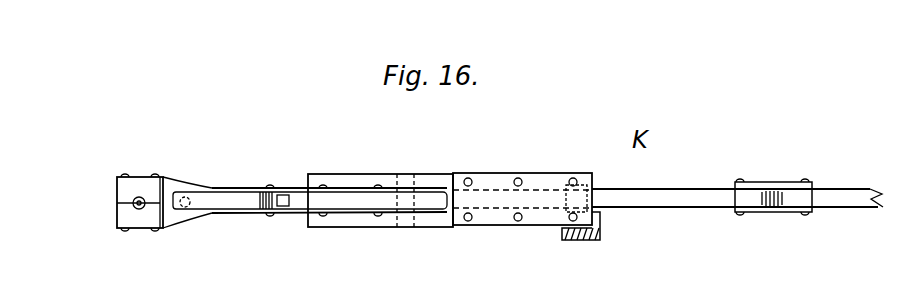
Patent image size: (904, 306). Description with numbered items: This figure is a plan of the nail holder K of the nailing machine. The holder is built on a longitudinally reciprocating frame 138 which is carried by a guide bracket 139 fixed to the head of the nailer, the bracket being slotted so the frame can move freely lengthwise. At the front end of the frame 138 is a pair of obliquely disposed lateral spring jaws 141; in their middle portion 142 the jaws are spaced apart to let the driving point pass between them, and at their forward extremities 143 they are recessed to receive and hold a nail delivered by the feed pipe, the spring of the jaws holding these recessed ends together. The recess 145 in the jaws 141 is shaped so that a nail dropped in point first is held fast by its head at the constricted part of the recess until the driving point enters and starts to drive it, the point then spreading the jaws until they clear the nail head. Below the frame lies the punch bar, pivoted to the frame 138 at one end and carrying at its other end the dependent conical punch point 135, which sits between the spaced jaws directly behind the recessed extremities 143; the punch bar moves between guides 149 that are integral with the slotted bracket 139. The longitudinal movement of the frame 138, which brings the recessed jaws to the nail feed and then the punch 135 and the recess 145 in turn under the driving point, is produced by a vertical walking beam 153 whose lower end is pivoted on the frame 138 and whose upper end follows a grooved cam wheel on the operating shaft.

The conical punch point 135 is at (187, 197).
The longitudinally reciprocating frame 138 is at (702, 188).
The guide bracket 139 is at (505, 222).
The spring jaws 141 is at (203, 184).
The middle portion 142 is at (210, 187).
The forward extremities 143 is at (127, 210).
The recess 145 is at (133, 200).
The guides 149 is at (357, 222).
The vertical walking beam 153 is at (600, 235).